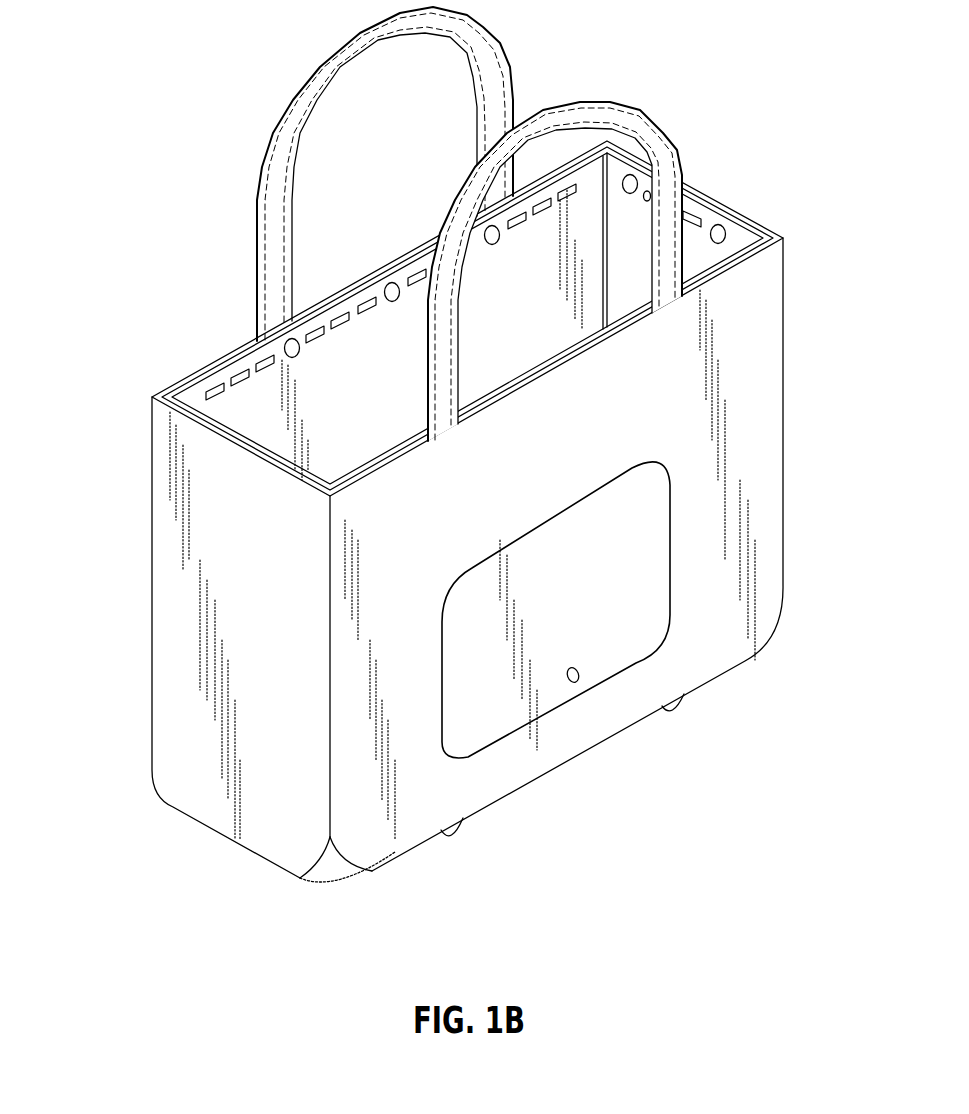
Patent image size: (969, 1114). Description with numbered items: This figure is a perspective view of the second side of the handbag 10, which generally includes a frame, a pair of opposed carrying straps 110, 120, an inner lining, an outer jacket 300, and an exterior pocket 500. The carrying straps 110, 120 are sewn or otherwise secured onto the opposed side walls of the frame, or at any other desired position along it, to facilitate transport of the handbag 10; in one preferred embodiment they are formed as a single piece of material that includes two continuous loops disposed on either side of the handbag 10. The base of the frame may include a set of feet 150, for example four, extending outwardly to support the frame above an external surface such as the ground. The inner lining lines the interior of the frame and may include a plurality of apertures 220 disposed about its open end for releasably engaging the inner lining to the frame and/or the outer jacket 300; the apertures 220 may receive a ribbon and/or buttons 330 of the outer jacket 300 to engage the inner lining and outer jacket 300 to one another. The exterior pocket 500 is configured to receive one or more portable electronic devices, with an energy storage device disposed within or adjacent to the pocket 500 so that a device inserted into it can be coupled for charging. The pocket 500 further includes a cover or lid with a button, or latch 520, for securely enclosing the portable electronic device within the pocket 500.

The handbag 10 is at (120, 99).
The carrying strap 110 is at (284, 176).
The carrying strap 120 is at (660, 144).
The feet 150 is at (673, 710).
The apertures 220 is at (418, 268).
The outer jacket 300 is at (768, 345).
The buttons 330 is at (390, 283).
The exterior pocket 500 is at (652, 532).
The button 520 is at (579, 679).